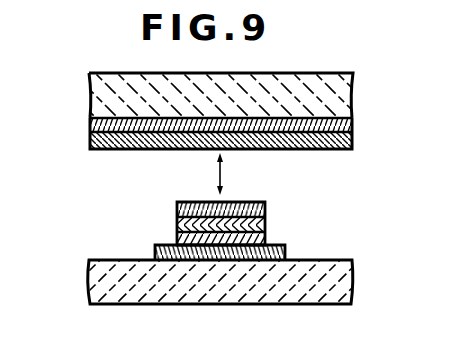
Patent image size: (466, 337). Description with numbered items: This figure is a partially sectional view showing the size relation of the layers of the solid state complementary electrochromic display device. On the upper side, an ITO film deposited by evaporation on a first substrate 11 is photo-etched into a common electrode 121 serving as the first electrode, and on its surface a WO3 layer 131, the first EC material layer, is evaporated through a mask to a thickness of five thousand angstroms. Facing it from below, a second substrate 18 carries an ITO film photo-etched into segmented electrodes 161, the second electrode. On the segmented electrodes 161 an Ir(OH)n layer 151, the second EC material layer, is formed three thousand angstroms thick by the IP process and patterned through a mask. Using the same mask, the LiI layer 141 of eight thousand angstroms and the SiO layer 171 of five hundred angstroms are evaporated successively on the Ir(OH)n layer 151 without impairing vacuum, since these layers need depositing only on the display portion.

The first substrate 11 is at (353, 90).
The common electrode 121 is at (353, 123).
The WO3 layer 131 is at (353, 143).
The SiO layer 171 is at (265, 210).
The LiI layer 141 is at (265, 222).
The Ir(OH)n layer 151 is at (177, 240).
The segmented electrodes 161 is at (156, 253).
The second substrate 18 is at (89, 278).